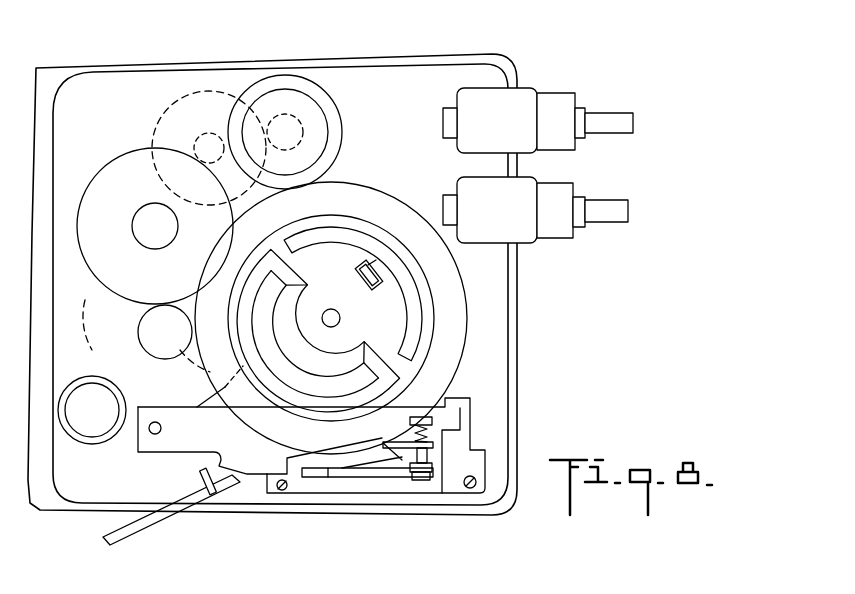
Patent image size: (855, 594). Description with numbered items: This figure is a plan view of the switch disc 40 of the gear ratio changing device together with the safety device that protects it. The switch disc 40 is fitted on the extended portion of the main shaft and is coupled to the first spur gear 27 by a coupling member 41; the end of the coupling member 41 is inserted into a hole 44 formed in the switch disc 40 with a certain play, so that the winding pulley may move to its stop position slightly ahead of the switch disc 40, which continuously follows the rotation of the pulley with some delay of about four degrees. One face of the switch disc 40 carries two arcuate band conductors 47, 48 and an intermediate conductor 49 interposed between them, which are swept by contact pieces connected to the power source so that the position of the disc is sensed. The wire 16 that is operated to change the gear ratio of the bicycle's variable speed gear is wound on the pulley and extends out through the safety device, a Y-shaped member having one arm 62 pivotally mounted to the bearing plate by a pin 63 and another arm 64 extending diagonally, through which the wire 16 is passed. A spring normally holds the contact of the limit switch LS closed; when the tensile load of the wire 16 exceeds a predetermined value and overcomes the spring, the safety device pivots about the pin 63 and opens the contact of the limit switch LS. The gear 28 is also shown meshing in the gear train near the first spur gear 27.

The wire 16 is at (137, 530).
The first spur gear 27 is at (461, 349).
The gear 28 is at (138, 332).
The switch disc 40 is at (394, 305).
The coupling member 41 is at (368, 265).
The hole 44 is at (382, 285).
The arcuate band conductor 47 is at (330, 233).
The arcuate band conductor 48 is at (283, 393).
The intermediate conductor 49 is at (359, 355).
The arm 62 is at (181, 446).
The pin 63 is at (150, 434).
The arm 64 is at (228, 480).
The limit switch LS is at (377, 478).